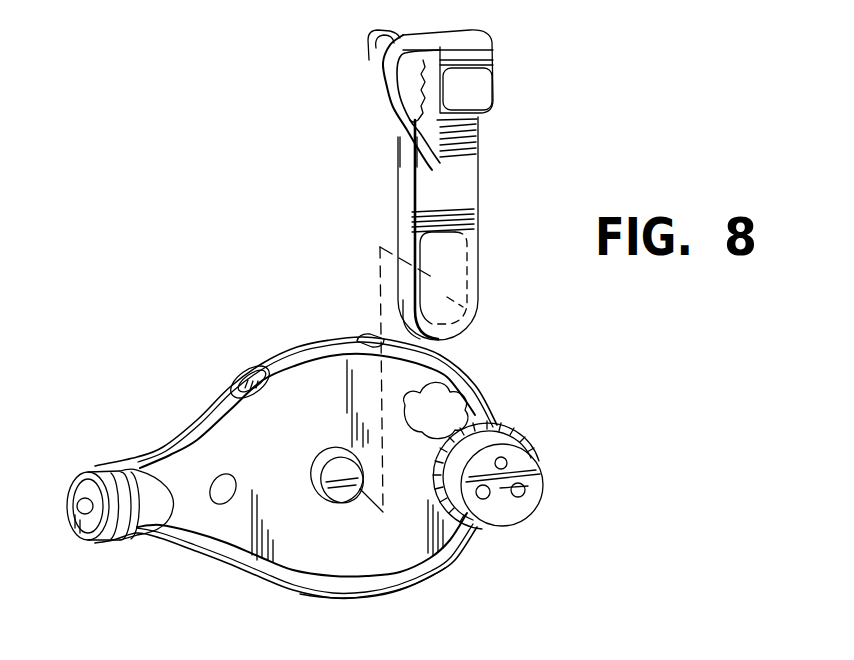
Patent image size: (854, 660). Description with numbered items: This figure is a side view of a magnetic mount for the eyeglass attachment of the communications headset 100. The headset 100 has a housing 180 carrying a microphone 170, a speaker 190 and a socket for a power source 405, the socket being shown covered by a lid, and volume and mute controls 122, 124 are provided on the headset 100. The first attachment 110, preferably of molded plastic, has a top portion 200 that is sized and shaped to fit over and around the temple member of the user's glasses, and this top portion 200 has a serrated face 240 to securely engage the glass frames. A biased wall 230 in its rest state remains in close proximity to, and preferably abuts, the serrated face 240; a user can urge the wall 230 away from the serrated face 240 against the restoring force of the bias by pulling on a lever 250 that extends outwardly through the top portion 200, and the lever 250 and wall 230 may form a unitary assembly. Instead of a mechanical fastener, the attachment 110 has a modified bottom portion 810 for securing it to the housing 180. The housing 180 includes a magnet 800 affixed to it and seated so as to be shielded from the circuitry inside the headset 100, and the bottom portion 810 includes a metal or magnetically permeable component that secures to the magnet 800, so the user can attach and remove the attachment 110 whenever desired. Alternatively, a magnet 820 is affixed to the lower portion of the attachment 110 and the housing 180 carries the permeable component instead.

The communications headset 100 is at (257, 578).
The first attachment 110 is at (393, 214).
The volume control 122 is at (242, 378).
The mute control 124 is at (370, 336).
The microphone 170 is at (84, 498).
The housing 180 is at (407, 576).
The speaker 190 is at (530, 492).
The top portion 200 is at (476, 47).
The biased wall 230 is at (403, 138).
The serrated face 240 is at (480, 80).
The lever 250 is at (365, 46).
The socket for a power source 405 is at (458, 408).
The magnet 800 is at (343, 490).
The modified bottom portion 810 is at (458, 187).
The magnet 820 is at (480, 313).